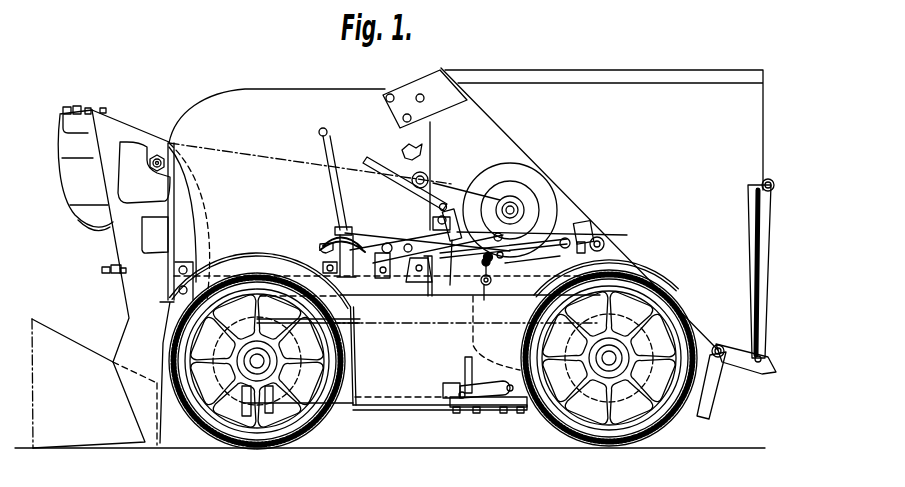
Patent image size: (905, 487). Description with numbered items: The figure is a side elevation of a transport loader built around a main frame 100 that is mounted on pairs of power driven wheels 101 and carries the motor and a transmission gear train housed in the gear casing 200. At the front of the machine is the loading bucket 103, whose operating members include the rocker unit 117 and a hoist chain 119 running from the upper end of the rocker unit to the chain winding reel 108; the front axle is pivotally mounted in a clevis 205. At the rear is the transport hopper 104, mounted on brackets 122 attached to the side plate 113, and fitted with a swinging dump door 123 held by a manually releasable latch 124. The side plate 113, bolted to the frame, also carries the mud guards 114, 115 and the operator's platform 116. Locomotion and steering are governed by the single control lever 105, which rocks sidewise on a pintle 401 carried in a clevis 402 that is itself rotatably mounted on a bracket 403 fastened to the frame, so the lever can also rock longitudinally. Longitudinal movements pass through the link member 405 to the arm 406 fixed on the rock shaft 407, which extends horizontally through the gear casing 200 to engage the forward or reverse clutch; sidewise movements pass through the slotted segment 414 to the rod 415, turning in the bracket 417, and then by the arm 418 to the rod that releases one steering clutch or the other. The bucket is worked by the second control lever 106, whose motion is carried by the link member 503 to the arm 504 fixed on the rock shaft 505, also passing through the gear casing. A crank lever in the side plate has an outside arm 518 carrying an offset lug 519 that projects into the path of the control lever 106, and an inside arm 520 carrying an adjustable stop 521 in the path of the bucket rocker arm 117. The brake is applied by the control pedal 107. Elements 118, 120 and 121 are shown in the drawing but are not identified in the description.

The main frame 100 is at (476, 340).
The power driven wheels 101 is at (326, 424).
The loading bucket 103 is at (84, 350).
The transport hopper 104 is at (626, 70).
The control lever 105 is at (319, 132).
The control lever 106 is at (378, 181).
The control pedal 107 is at (458, 377).
The chain winding reel 108 is at (507, 183).
The side plate 113 is at (262, 92).
The mud guard 114 is at (260, 252).
The mud guard 115 is at (556, 287).
The operator's platform 116 is at (407, 412).
The rocker unit 117 is at (122, 247).
The bracket 118 is at (302, 277).
The hoist chain 119 is at (239, 141).
The bracket 120 is at (103, 274).
The hinge 121 is at (88, 110).
The brackets 122 is at (426, 74).
The swinging dump door 123 is at (762, 315).
The manually releasable latch 124 is at (730, 370).
The gear casing 200 is at (566, 188).
The clevis 205 is at (243, 405).
The pintle 401 is at (350, 321).
The clevis 402 is at (352, 285).
The bracket 403 is at (358, 276).
The link member 405 is at (406, 232).
The arm 406 is at (460, 286).
The rock shaft 407 is at (488, 286).
The slotted segment 414 is at (330, 232).
The rod 415 is at (425, 288).
The bracket 417 is at (571, 250).
The arm 418 is at (605, 237).
The link member 503 is at (434, 268).
The arm 504 is at (502, 241).
The rock shaft 505 is at (505, 258).
The outside arm 518 is at (412, 176).
The offset lug 519 is at (438, 207).
The inside arm 520 is at (434, 169).
The adjustable stop 521 is at (403, 147).